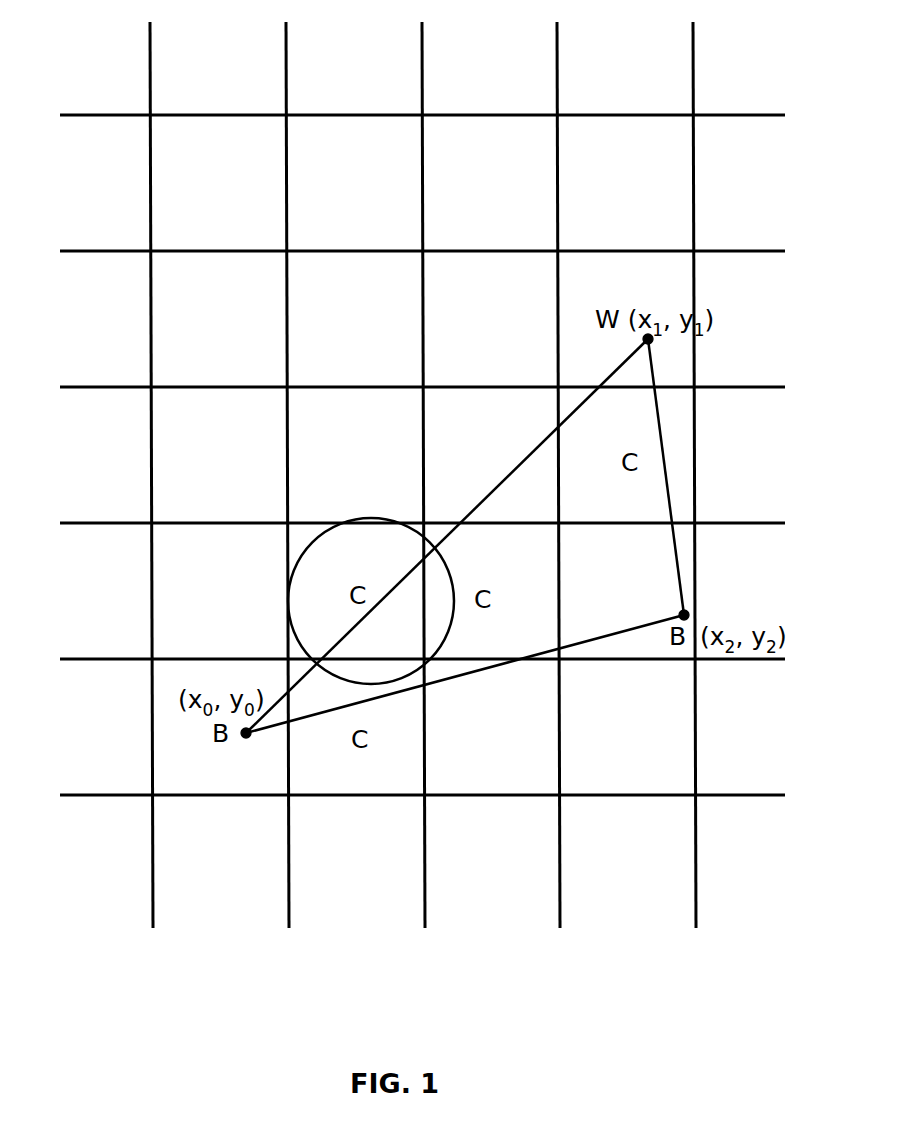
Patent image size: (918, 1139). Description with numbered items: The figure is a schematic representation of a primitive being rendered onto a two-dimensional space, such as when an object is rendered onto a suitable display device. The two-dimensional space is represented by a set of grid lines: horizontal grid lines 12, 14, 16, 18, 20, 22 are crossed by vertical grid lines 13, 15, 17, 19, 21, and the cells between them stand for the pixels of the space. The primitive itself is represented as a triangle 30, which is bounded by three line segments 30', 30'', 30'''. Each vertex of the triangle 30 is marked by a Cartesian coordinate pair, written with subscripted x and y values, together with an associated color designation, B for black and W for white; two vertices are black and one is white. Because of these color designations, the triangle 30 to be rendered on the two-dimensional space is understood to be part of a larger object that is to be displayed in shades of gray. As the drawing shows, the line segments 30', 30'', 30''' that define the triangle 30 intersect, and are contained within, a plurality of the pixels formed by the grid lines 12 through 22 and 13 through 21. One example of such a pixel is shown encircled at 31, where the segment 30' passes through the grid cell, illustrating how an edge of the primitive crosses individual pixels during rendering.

The grid line 12 is at (97, 115).
The grid line 14 is at (97, 251).
The grid line 16 is at (97, 387).
The grid line 18 is at (97, 523).
The grid line 20 is at (97, 659).
The grid line 22 is at (97, 795).
The grid line 13 is at (151, 58).
The grid line 15 is at (287, 58).
The grid line 17 is at (423, 58).
The grid line 19 is at (558, 58).
The grid line 21 is at (694, 58).
The triangle 30 is at (465, 587).
The line segment 30' is at (447, 536).
The line segment 30'' is at (465, 674).
The line segment 30''' is at (718, 477).
The pixel 31 is at (373, 516).